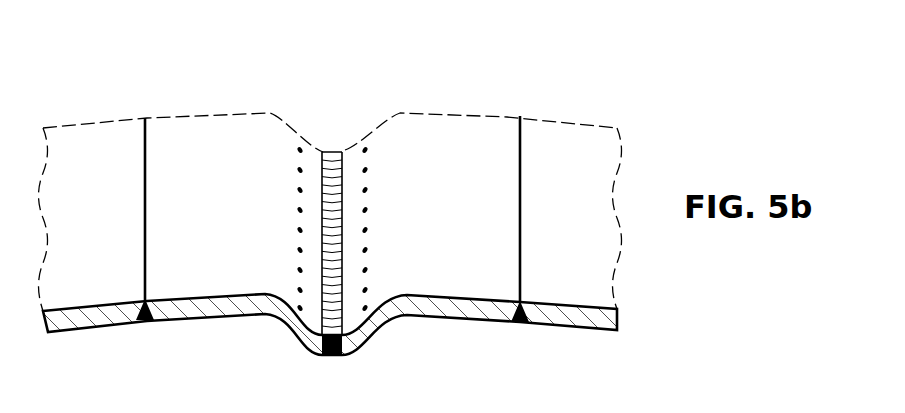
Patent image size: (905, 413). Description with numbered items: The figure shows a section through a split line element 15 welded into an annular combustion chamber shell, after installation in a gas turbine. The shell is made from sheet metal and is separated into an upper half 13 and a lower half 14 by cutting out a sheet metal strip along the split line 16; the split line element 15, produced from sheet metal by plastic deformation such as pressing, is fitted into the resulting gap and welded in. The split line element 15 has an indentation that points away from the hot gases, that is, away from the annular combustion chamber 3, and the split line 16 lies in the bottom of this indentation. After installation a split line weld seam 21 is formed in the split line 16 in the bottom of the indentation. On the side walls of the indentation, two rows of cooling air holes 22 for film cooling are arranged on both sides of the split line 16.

The annular combustion chamber 3 is at (485, 43).
The upper half 13 is at (97, 168).
The lower half 14 is at (567, 168).
The split line element 15 is at (183, 168).
The split line 16 is at (332, 368).
The split line weld seam 21 is at (328, 223).
The cooling air holes 22 is at (366, 170).